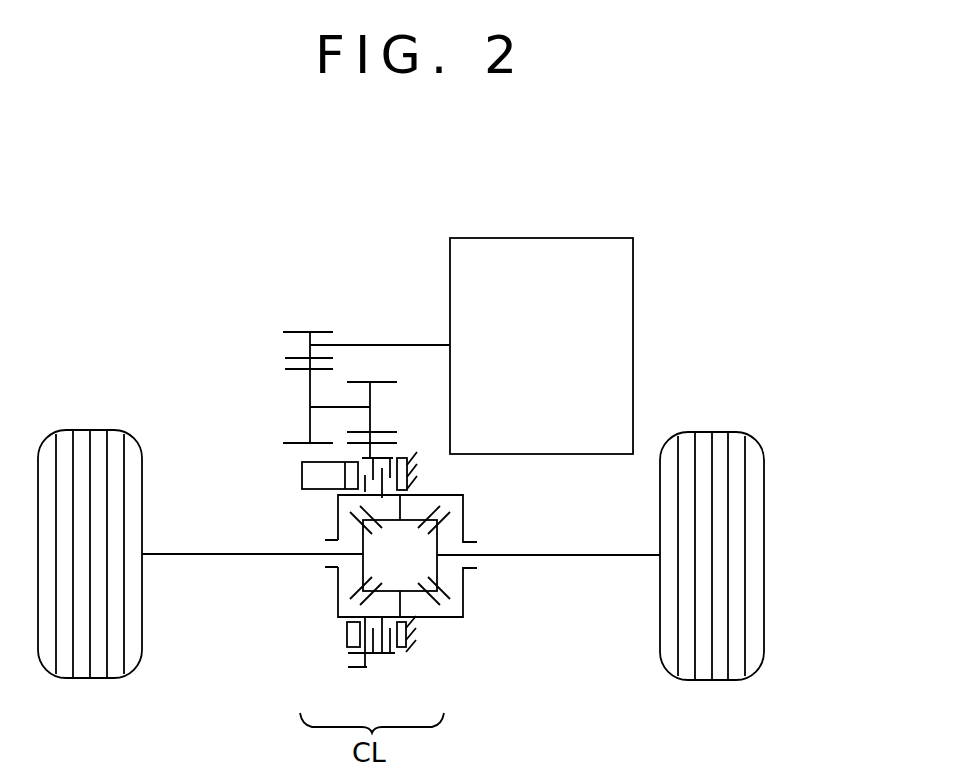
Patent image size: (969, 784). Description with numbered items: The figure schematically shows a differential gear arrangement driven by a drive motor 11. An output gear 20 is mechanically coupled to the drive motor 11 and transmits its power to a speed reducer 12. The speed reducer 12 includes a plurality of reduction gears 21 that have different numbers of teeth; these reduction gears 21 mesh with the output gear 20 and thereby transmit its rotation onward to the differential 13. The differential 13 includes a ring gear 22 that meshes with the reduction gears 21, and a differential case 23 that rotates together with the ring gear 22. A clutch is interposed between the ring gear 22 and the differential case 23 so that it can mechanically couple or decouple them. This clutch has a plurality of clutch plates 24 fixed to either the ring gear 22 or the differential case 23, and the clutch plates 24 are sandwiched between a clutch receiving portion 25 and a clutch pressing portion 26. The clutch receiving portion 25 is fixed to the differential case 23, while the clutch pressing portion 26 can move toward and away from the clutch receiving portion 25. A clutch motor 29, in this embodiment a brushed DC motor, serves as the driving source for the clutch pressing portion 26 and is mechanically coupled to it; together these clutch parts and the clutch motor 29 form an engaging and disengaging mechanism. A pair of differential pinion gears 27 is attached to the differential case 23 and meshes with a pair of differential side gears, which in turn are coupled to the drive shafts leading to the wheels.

The drive motor 11 is at (633, 293).
The speed reducer 12 is at (322, 368).
The differential 13 is at (423, 571).
The output gear 20 is at (295, 333).
The reduction gears 21 is at (346, 383).
The ring gear 22 is at (379, 434).
The differential case 23 is at (463, 515).
The clutch plates 24 is at (366, 655).
The clutch receiving portion 25 is at (401, 660).
The clutch pressing portion 26 is at (343, 645).
The differential pinion gears 27 is at (400, 520).
The clutch motor 29 is at (302, 476).